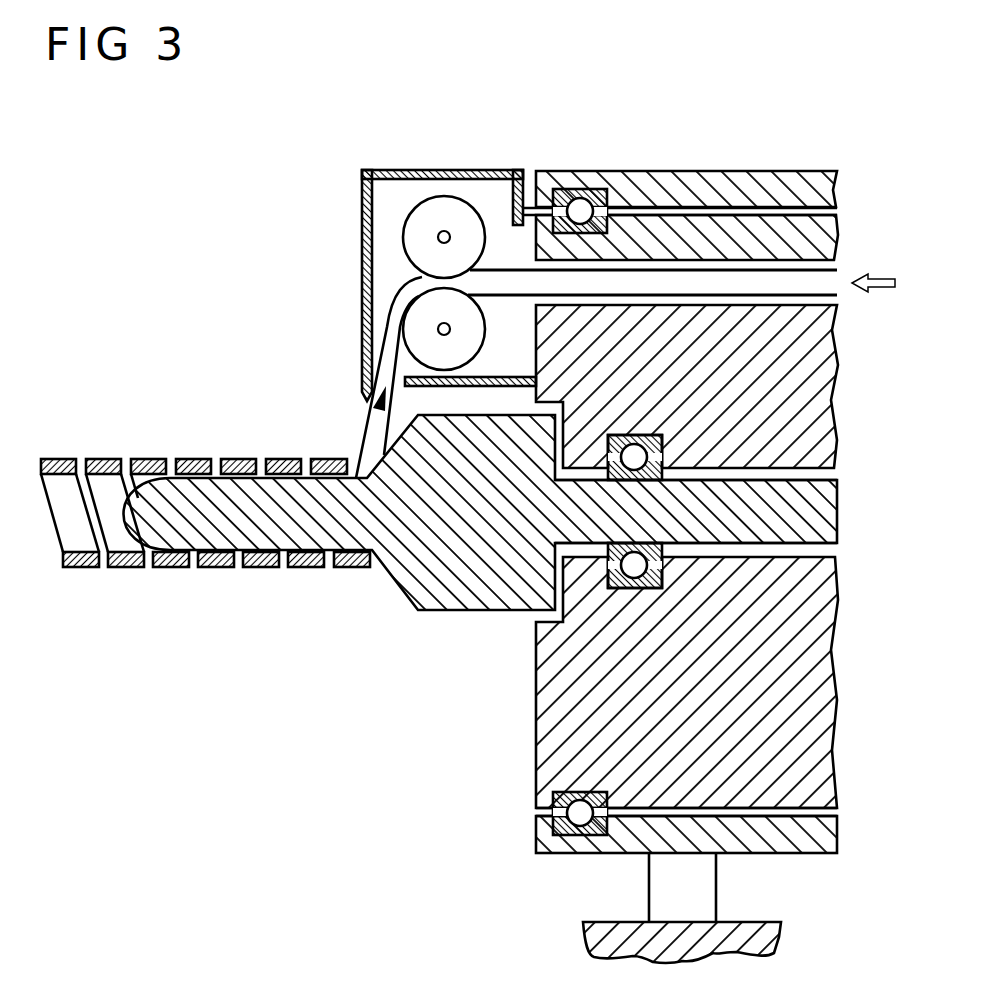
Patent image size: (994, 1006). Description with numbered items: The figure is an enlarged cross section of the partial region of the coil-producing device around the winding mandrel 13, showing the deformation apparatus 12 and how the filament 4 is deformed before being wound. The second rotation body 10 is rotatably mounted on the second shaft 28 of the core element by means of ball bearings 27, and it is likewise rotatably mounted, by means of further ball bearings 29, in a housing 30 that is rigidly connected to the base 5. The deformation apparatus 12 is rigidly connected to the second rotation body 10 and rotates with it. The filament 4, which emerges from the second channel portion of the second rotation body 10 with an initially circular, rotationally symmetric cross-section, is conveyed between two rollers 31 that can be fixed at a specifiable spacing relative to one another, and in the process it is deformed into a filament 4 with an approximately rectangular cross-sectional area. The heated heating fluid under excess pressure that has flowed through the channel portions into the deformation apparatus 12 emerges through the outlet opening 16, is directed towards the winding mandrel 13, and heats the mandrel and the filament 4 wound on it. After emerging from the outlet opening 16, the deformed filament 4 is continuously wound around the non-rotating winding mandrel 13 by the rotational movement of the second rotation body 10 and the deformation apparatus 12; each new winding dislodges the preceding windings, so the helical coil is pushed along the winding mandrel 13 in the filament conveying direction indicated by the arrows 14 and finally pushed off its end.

The filament 4 is at (832, 283).
The base 5 is at (603, 915).
The second rotation body 10 is at (822, 393).
The deformation apparatus 12 is at (397, 148).
The winding mandrel 13 is at (277, 513).
The arrows 14 is at (876, 295).
The outlet opening 16 is at (366, 425).
The ball bearings 27 is at (662, 439).
The second shaft 28 is at (822, 512).
The ball bearings 29 is at (606, 222).
The housing 30 is at (766, 173).
The rollers 31 is at (418, 331).